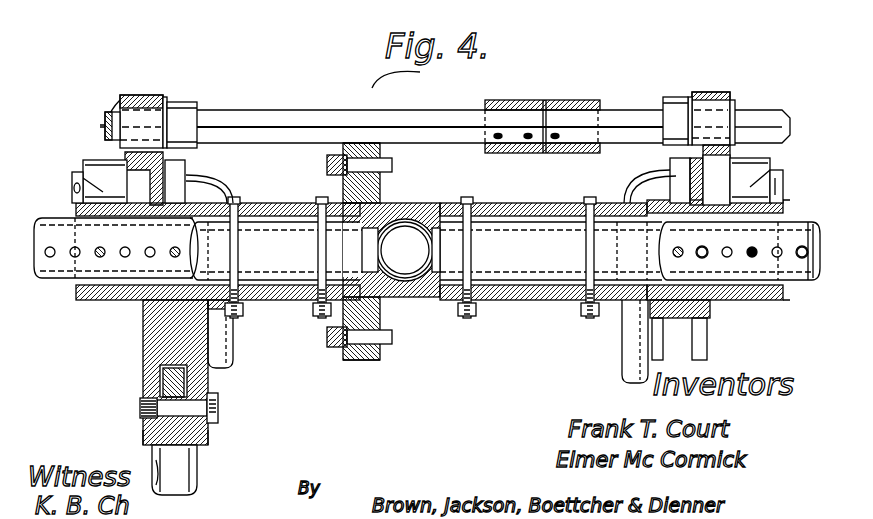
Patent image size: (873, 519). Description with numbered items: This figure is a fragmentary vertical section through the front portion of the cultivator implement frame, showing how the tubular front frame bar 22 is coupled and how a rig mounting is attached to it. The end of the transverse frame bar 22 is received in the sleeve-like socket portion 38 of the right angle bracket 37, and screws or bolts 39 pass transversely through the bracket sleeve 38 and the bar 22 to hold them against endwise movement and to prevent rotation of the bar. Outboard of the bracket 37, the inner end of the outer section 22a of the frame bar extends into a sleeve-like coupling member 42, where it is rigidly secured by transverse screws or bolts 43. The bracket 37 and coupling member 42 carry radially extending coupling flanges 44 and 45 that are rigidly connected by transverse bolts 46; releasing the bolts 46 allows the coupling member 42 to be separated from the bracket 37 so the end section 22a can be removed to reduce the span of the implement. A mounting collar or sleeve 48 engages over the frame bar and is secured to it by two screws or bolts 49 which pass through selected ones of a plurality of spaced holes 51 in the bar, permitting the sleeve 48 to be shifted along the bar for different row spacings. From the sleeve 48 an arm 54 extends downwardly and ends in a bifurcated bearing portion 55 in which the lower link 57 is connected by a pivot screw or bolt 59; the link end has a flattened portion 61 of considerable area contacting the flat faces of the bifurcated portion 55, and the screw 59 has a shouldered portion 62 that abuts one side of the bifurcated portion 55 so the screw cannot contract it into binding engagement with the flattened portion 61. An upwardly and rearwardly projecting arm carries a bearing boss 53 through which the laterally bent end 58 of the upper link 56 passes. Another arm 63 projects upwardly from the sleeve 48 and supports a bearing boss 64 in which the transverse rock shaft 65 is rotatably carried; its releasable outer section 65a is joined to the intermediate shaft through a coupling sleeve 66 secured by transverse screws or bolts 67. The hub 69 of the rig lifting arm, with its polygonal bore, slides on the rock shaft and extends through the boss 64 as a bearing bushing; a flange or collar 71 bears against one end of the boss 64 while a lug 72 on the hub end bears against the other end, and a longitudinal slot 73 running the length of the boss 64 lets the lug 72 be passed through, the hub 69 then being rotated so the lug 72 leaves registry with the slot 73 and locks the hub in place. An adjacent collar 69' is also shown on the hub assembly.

The transverse frame bar 22 is at (790, 218).
The outer section of front frame bar 22a is at (55, 302).
The right angle bracket 37 is at (433, 297).
The sleeve-like socket portion 38 is at (520, 302).
The screws or bolts 39 is at (583, 240).
The sleeve-like coupling member 42 is at (287, 303).
The screws or bolts 43 is at (313, 237).
The coupling flange 44 is at (382, 188).
The coupling flange 45 is at (343, 186).
The transverse bolts 46 is at (327, 163).
The mounting collar or sleeve 48 is at (777, 297).
The screws or bolts 49 is at (751, 255).
The spaced holes 51 is at (722, 243).
The bearing boss 53 is at (90, 160).
The arm 54 is at (143, 318).
The bifurcated bearing portion 55 is at (143, 430).
The upper link 56 is at (232, 360).
The lower link 57 is at (197, 483).
The bent end of upper link 58 is at (198, 178).
The pivot screw or bolt 59 is at (218, 415).
The flattened portion 61 is at (160, 385).
The shouldered portion 62 is at (140, 408).
The arm 63 is at (160, 182).
The bearing boss 64 is at (155, 78).
The rock shaft 65 is at (780, 112).
The outer section of rock shaft 65a is at (325, 118).
The coupling sleeve 66 is at (487, 102).
The screws or bolts 67 is at (555, 139).
The hub 69 is at (419, 91).
The collar 69' is at (427, 106).
The flange or collar 71 is at (166, 97).
The lug 72 is at (105, 118).
The longitudinal slot 73 is at (118, 150).